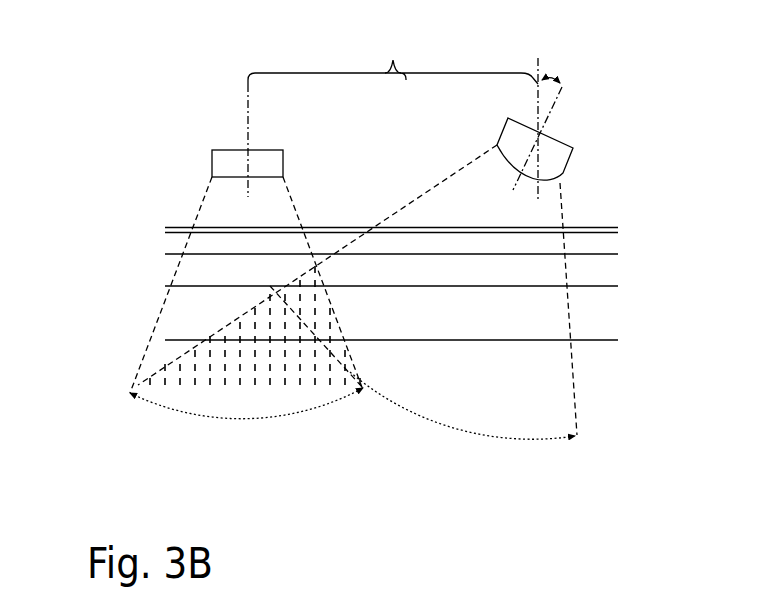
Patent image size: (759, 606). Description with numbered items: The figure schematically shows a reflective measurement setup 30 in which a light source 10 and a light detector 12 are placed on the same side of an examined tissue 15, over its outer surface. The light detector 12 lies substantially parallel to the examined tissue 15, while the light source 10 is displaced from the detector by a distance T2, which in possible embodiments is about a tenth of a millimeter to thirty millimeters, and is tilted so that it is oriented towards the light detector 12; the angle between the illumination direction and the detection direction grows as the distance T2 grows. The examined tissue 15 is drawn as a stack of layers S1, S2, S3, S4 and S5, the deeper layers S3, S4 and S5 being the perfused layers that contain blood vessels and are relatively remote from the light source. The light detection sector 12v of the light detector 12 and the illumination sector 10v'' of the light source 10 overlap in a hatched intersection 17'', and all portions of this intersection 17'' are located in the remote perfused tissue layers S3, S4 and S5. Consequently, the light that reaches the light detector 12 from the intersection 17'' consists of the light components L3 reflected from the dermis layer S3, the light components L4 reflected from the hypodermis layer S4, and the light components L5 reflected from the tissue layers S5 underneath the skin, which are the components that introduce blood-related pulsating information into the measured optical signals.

The light source 10 is at (503, 131).
The illumination sector 10v'' is at (357, 294).
The light detector 12 is at (212, 163).
The light detection sector 12v is at (246, 420).
The examined tissue 15 is at (172, 225).
The intersection 17'' is at (255, 402).
The measurement setup 30 is at (687, 160).
The distance T2 is at (393, 55).
The tissue layer S1 is at (157, 230).
The tissue layer S2 is at (157, 244).
The dermis layer S3 is at (151, 272).
The hypodermis layer S4 is at (147, 313).
The tissue layer underneath the skin S5 is at (152, 369).
The light components L3 is at (288, 282).
The light components L4 is at (330, 318).
The light components L5 is at (278, 362).